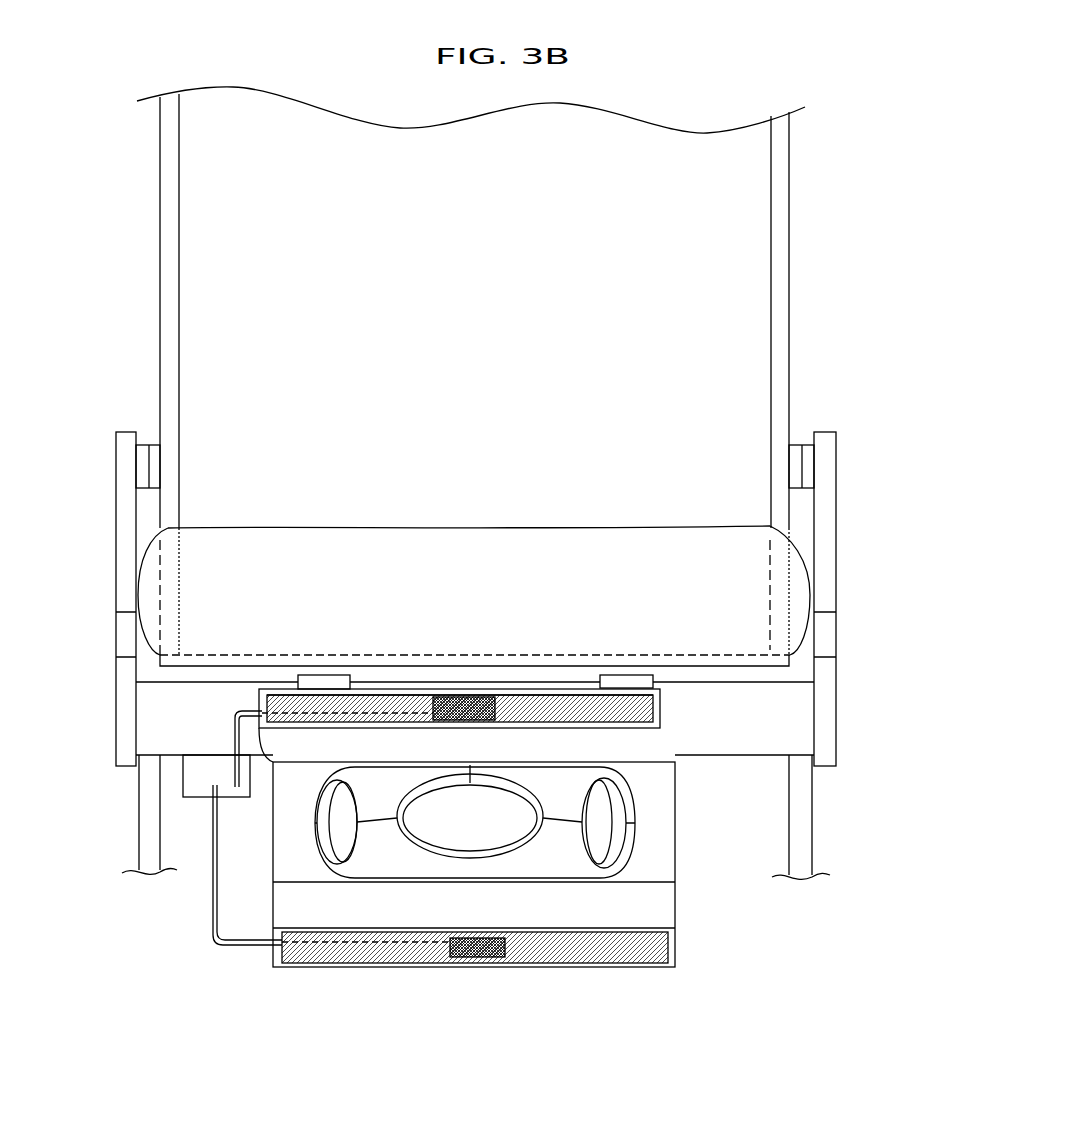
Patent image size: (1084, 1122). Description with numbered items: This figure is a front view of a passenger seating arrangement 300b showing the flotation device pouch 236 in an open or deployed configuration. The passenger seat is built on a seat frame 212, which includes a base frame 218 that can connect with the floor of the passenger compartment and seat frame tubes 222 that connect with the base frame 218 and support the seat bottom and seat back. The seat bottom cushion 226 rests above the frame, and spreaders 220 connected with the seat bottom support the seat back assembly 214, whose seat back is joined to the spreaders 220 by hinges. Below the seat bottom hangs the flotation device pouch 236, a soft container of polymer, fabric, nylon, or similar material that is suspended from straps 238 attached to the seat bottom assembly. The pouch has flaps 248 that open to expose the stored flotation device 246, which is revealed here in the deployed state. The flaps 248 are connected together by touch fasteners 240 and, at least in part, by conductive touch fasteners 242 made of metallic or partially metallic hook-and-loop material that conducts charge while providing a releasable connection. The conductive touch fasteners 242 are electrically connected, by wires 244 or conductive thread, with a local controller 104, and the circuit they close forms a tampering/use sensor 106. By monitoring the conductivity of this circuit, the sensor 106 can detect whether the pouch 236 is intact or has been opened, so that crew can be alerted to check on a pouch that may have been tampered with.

The passenger seating arrangement (open configuration) 300b is at (645, 84).
The seat back assembly 214 is at (812, 207).
The seat bottom cushion 226 is at (453, 528).
The touch fasteners 240 is at (478, 315).
The conductive touch fasteners 242 is at (163, 466).
The tampering/use sensor 106 is at (469, 827).
The spreaders 220 is at (836, 586).
The seat frame 212 is at (857, 673).
The local controller 104 is at (185, 790).
The base frame 218 is at (808, 826).
The straps 238 is at (322, 683).
The flaps 248 is at (660, 746).
The flotation device pouch 236 is at (692, 845).
The flotation device 246 is at (568, 797).
The wire 244 is at (233, 733).
The seat frame tubes 222 is at (552, 690).